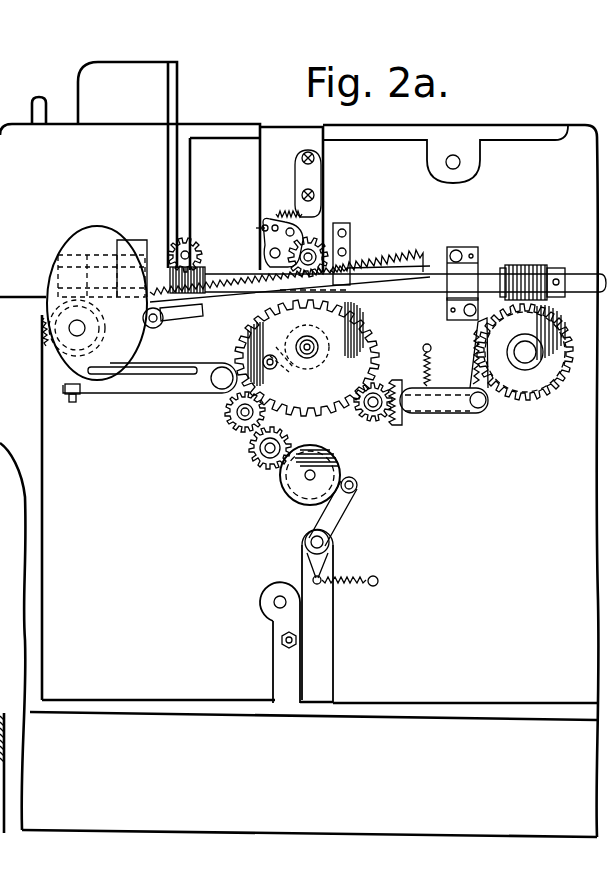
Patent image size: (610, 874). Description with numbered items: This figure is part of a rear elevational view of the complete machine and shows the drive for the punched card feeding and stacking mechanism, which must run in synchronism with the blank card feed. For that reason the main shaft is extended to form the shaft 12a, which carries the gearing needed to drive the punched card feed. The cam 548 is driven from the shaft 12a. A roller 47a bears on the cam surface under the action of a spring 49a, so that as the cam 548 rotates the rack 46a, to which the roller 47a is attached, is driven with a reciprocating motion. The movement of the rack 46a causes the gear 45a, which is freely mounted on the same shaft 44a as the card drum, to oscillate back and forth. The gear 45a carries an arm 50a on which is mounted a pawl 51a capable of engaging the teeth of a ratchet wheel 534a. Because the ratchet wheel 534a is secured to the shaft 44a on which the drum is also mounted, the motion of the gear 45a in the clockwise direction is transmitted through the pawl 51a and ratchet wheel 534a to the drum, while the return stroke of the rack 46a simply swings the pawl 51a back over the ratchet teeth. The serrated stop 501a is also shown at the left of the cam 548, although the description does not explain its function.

The cam 548 is at (104, 233).
The serrated stop 501a is at (44, 325).
The roller 47a is at (170, 334).
The rack 46a is at (219, 318).
The pawl 51a is at (307, 358).
The ratchet wheel 534a is at (325, 338).
The shaft 44a is at (272, 356).
The gear 45a is at (322, 357).
The arm 50a is at (272, 371).
The spring 49a is at (394, 262).
The shaft 12a is at (490, 274).